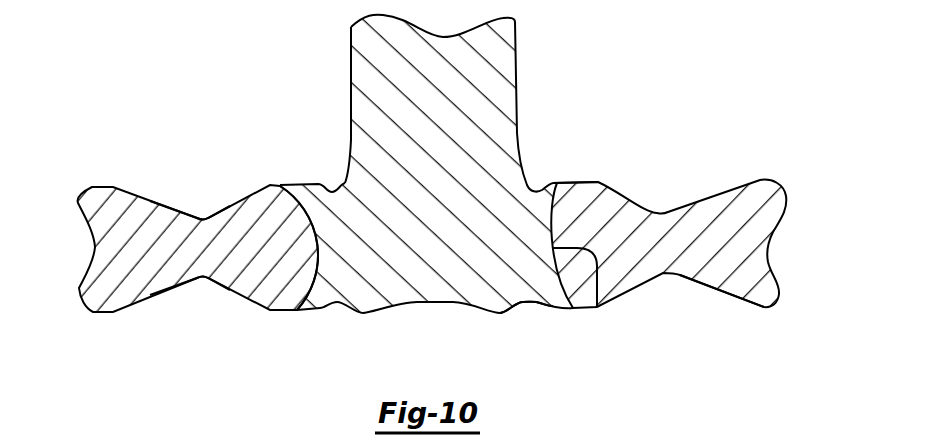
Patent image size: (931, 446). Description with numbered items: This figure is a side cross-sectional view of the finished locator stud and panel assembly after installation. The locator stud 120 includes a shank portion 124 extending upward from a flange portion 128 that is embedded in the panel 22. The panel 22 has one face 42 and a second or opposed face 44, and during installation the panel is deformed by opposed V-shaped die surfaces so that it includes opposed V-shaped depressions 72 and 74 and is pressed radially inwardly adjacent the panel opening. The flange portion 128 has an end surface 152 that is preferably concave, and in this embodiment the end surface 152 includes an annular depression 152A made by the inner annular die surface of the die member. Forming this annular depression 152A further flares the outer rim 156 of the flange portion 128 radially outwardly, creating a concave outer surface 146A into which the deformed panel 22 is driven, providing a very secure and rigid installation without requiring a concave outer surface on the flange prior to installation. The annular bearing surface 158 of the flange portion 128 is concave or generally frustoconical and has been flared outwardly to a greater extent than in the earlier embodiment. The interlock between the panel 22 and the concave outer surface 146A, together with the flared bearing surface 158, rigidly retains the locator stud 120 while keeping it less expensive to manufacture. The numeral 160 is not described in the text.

The panel 22 is at (110, 246).
The V-shaped depression 72 is at (207, 217).
The V-shaped depression 74 is at (207, 279).
The concave outer surface 146A is at (317, 243).
The outer rim 156 is at (300, 308).
The upper surface of base 160 is at (293, 183).
The shank portion 124 is at (355, 117).
The locator stud 120 is at (440, 195).
The end surface 152 is at (440, 306).
The annular depression 152A is at (530, 304).
The annular bearing surface 158 is at (540, 186).
The face of the panel 42 is at (767, 178).
The opposed face of the panel 44 is at (763, 308).
The flange portion 128 is at (597, 307).